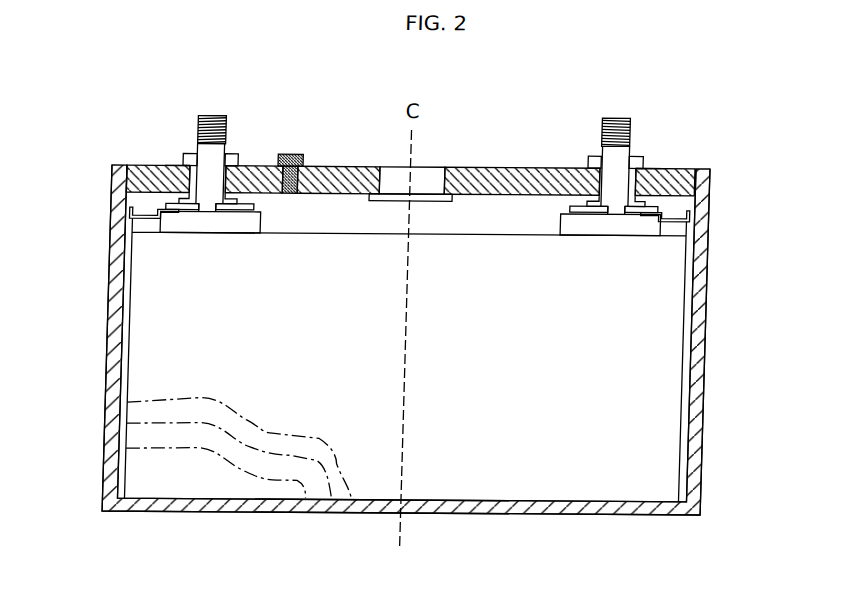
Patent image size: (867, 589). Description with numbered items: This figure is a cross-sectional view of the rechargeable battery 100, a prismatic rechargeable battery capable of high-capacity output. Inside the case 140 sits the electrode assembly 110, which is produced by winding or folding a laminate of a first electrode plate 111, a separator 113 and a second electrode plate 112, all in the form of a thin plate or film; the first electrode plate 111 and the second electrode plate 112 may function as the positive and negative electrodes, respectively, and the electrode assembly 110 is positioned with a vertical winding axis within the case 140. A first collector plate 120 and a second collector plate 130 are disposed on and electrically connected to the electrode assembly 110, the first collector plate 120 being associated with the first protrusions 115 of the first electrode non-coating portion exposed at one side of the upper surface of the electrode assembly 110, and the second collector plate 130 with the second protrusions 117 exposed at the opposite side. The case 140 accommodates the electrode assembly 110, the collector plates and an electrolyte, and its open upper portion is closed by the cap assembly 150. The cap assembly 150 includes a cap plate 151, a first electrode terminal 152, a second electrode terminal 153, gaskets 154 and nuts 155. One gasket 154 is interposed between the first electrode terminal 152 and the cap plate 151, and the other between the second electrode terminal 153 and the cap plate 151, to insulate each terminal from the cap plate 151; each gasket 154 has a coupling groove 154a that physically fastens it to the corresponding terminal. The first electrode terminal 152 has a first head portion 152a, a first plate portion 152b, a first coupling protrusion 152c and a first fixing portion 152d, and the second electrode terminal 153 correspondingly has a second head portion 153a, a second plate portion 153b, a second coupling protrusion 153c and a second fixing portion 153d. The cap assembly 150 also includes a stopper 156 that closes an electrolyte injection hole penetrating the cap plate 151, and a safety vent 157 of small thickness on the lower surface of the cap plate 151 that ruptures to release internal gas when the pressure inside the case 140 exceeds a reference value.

The rechargeable battery 100 is at (764, 104).
The electrode assembly 110 is at (484, 479).
The first electrode plate 111 is at (226, 485).
The second electrode plate 112 is at (358, 483).
The separator 113 is at (331, 485).
The first protrusions 115 is at (128, 224).
The second protrusions 117 is at (694, 222).
The first collector plate 120 is at (136, 202).
The second collector plate 130 is at (687, 211).
The case 140 is at (710, 326).
The cap assembly 150 is at (494, 136).
The cap plate 151 is at (331, 164).
The first electrode terminal 152 is at (194, 98).
The first head portion 152a is at (215, 114).
The first plate portion 152b is at (227, 207).
The first coupling protrusion 152c is at (186, 209).
The first fixing portion 152d is at (210, 216).
The second electrode terminal 153 is at (625, 106).
The second head portion 153a is at (609, 116).
The second plate portion 153b is at (595, 210).
The second coupling protrusion 153c is at (637, 217).
The second fixing portion 153d is at (614, 217).
The gaskets 154 is at (182, 151).
The coupling groove 154a is at (167, 164).
The nuts 155 is at (236, 152).
The stopper 156 is at (282, 152).
The safety vent 157 is at (365, 192).